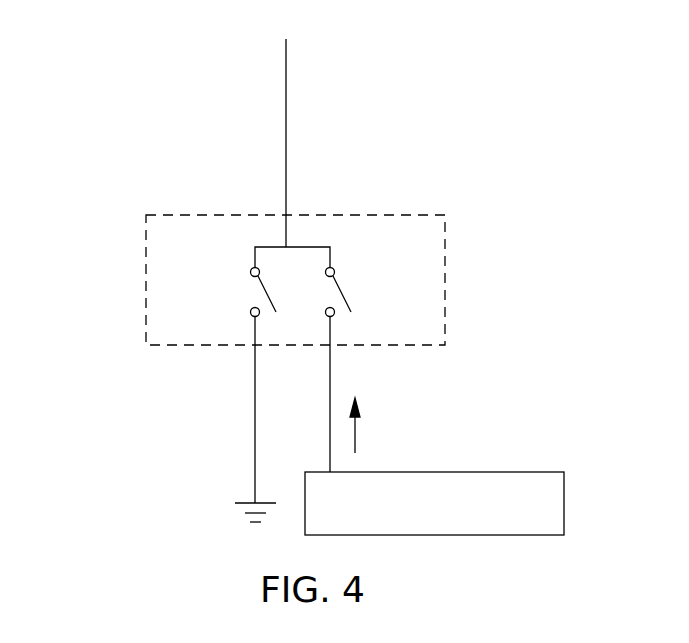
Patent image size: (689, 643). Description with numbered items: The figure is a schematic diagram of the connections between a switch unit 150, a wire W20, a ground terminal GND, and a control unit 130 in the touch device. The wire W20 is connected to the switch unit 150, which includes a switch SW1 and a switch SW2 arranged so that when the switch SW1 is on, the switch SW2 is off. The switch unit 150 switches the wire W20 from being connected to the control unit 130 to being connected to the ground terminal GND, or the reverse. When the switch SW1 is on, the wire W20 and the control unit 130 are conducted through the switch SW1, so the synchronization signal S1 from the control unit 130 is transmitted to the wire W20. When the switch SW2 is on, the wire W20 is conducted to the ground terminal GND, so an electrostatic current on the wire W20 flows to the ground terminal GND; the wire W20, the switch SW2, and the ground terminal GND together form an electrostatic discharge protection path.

The wire W20 is at (285, 138).
The switch unit 150 is at (146, 290).
The switch SW1 is at (342, 282).
The switch SW2 is at (240, 282).
The ground terminal GND is at (220, 420).
The synchronization signal S1 is at (369, 395).
The control unit 130 is at (564, 494).